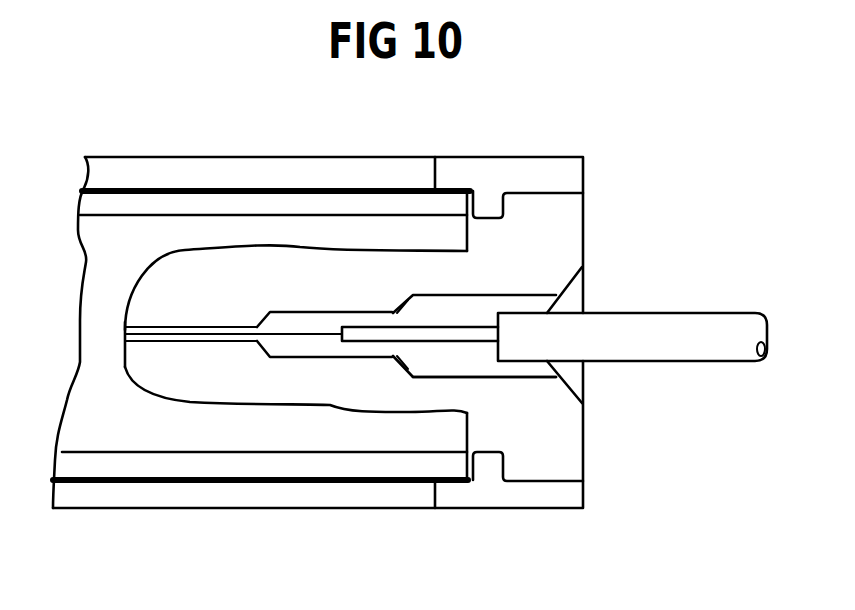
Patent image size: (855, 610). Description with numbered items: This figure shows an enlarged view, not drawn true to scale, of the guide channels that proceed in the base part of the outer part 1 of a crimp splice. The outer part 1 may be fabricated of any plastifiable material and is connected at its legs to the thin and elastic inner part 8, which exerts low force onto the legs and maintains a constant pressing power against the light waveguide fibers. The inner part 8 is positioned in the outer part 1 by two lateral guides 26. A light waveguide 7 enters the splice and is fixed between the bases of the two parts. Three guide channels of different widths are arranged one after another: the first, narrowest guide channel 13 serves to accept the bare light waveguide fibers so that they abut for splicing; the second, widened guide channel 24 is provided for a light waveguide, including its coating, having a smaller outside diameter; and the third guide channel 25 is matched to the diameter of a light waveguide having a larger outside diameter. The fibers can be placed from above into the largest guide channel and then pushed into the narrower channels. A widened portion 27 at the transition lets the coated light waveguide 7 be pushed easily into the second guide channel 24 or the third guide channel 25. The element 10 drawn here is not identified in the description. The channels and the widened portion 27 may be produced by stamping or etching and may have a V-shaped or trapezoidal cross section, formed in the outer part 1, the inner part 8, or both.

The outer part 1 is at (215, 175).
The light waveguide 7 is at (722, 327).
The inner part 8 is at (335, 205).
The insulating housing 10 is at (473, 328).
The first guide channel 13 is at (146, 341).
The second guide channel 24 is at (333, 345).
The third guide channel 25 is at (487, 368).
The lateral guides 26 is at (488, 205).
The widened portion 27 is at (573, 375).